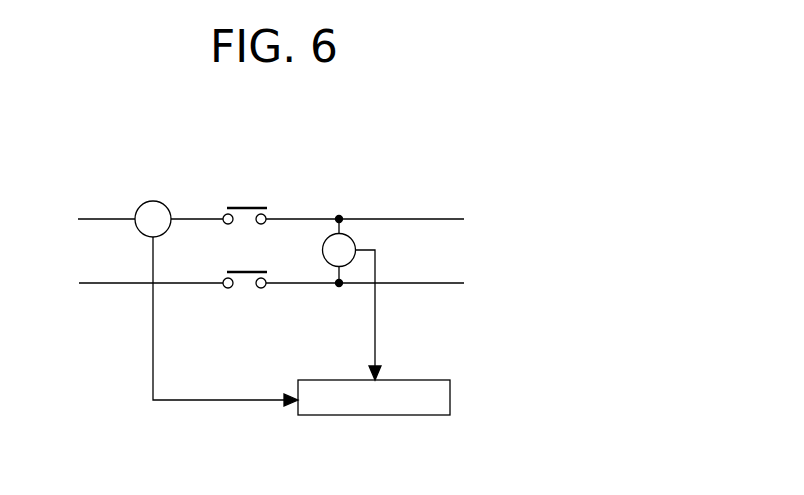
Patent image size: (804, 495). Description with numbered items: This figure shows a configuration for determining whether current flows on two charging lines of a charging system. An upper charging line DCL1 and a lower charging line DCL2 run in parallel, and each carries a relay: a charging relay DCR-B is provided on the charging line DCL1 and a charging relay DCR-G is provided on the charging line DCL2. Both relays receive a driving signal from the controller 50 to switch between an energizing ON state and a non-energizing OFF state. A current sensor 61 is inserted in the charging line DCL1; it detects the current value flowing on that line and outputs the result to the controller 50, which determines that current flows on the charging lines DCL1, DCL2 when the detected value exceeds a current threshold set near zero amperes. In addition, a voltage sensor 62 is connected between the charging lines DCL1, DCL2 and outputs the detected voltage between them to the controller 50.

The current sensor 61 is at (153, 201).
The voltage sensor 62 is at (323, 250).
The controller 50 is at (367, 417).
The charging line DCL1 is at (96, 217).
The charging line DCL2 is at (99, 285).
The charging relay DCR-B is at (244, 206).
The charging relay DCR-G is at (244, 290).